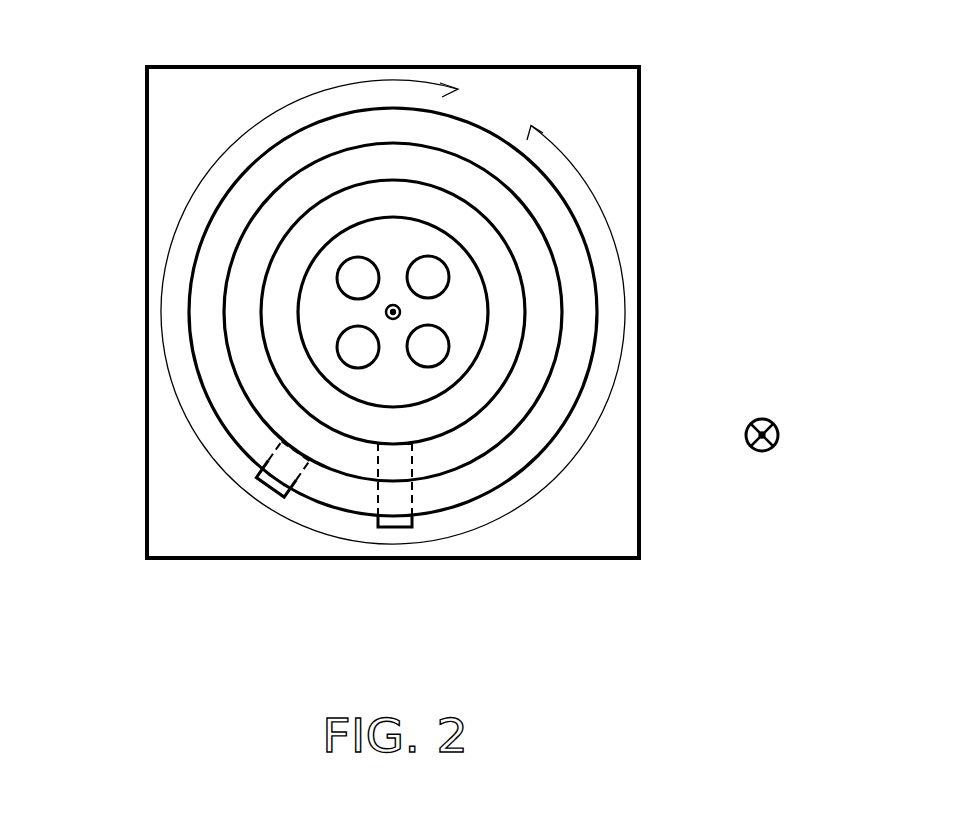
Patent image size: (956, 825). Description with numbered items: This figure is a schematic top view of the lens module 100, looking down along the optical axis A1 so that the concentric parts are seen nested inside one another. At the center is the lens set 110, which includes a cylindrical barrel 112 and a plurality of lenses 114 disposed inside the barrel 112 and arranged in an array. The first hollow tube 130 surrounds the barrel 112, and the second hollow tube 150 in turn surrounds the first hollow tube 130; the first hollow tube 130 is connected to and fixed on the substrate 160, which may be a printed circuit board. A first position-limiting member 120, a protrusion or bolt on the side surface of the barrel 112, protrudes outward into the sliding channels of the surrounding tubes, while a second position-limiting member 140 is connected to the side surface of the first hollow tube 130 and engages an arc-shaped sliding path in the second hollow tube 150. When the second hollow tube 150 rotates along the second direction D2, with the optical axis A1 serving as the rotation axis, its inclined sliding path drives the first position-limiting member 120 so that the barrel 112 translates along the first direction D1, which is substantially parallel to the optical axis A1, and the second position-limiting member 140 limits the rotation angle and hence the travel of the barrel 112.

The lens module 100 is at (453, 334).
The lens set 110 is at (433, 370).
The barrel 112 is at (458, 218).
The lens 114 is at (433, 275).
The first position-limiting member 120 is at (413, 492).
The first hollow tube 130 is at (555, 297).
The second position-limiting member 140 is at (305, 468).
The second hollow tube 150 is at (573, 390).
The substrate 160 is at (617, 488).
The optical axis A1 is at (396, 313).
The first direction D1 is at (779, 435).
The second direction D2 is at (265, 117).